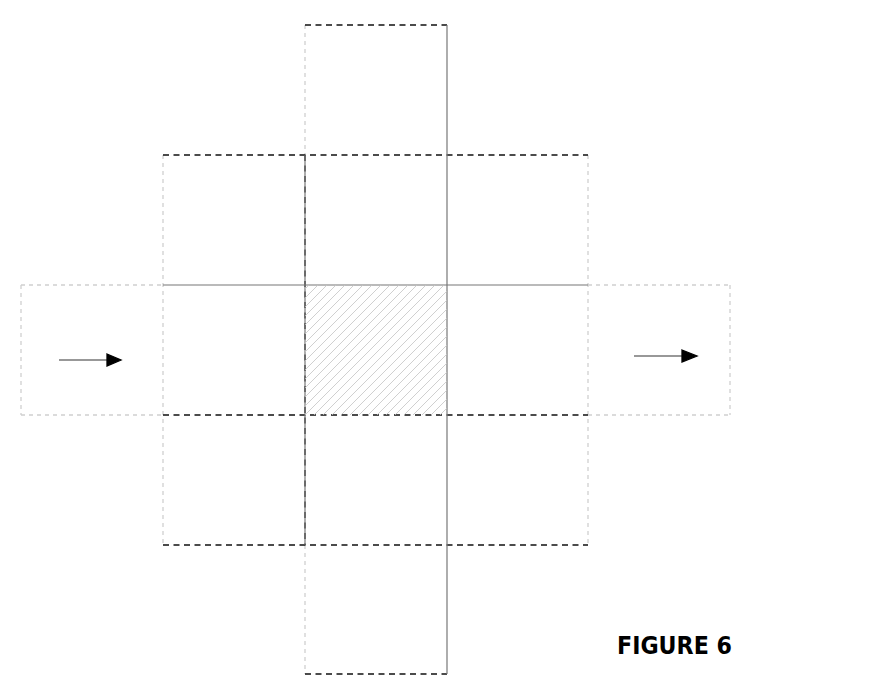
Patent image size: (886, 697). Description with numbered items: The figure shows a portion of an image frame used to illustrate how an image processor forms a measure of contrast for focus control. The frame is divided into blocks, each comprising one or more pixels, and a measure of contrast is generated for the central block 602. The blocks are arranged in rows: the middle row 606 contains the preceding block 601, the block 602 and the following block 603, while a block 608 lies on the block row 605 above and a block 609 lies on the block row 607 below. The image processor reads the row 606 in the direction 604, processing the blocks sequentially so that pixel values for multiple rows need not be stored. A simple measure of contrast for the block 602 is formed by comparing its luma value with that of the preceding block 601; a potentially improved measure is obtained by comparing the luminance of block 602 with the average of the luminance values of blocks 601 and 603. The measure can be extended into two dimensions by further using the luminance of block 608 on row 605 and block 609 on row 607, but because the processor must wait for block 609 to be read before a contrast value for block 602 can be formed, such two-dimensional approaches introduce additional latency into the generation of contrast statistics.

The preceding block 601 is at (234, 350).
The block 602 is at (376, 350).
The following block 603 is at (517, 350).
The read direction 604 is at (378, 349).
The block row 605 is at (750, 224).
The row 606 is at (750, 364).
The block row 607 is at (750, 490).
The block 608 is at (376, 155).
The block 609 is at (376, 544).